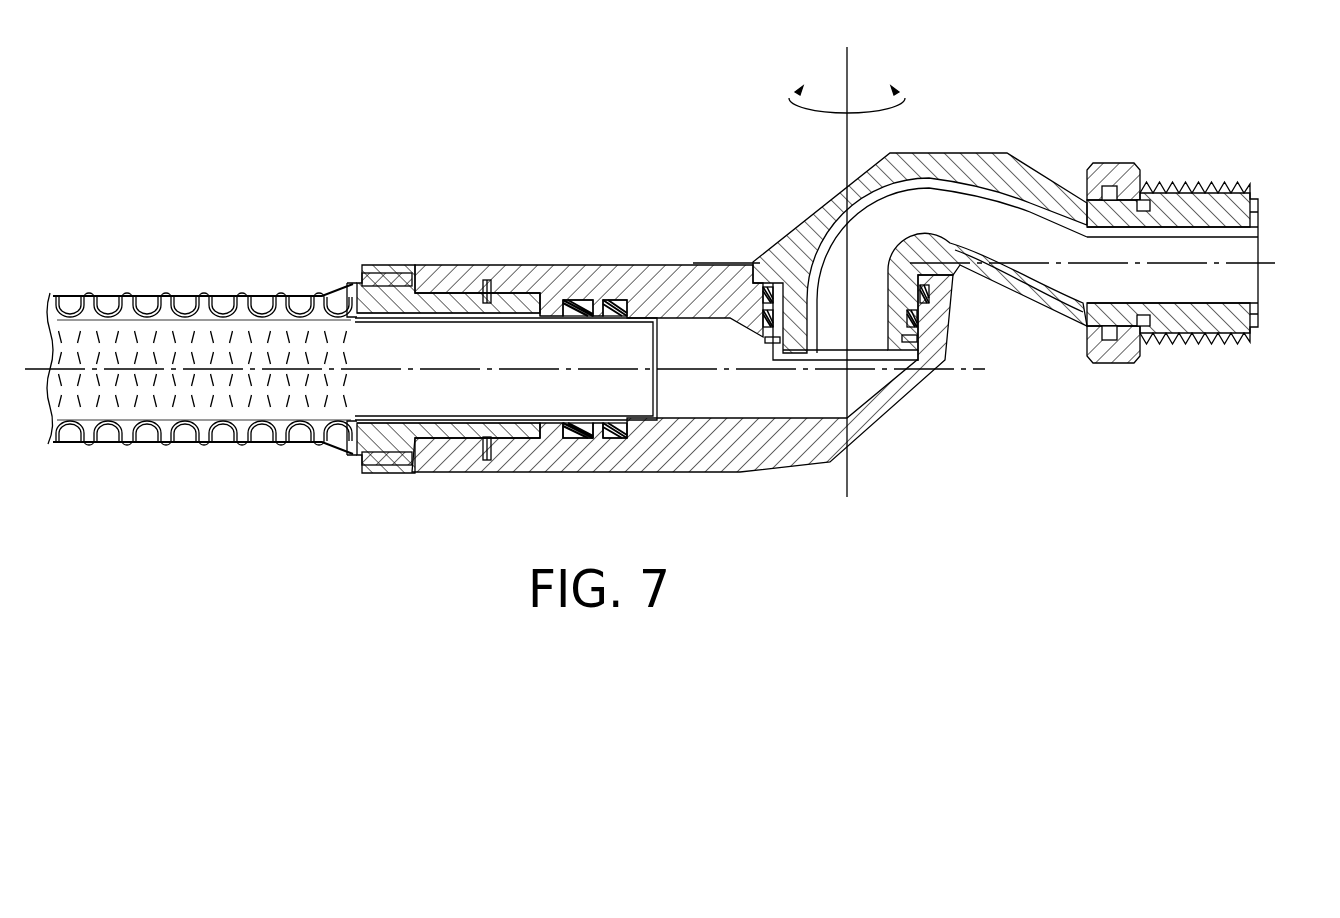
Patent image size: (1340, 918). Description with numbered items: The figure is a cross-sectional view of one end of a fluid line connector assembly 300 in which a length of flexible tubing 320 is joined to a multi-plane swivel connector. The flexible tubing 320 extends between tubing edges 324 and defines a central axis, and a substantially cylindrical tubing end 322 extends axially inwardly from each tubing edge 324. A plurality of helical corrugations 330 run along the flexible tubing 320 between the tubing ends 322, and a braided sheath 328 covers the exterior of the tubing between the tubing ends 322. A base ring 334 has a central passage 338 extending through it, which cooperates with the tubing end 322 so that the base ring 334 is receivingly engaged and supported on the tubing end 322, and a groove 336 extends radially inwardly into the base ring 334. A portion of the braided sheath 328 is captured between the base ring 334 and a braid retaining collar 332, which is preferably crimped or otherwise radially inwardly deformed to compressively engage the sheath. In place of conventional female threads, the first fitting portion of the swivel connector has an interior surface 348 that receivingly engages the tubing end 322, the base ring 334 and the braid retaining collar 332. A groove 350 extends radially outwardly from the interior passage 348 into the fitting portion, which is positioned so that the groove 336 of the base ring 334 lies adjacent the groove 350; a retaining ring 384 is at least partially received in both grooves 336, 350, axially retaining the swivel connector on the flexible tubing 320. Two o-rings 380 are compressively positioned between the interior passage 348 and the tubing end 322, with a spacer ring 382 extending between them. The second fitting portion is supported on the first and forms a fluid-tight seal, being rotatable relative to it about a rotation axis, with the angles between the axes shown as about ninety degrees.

The fluid line connector assembly 300 is at (626, 182).
The flexible tubing 320 is at (150, 292).
The tubing end 322 is at (647, 432).
The tubing edge 324 is at (596, 392).
The braided sheath 328 is at (263, 443).
The helical corrugations 330 is at (163, 430).
The braid retaining collar 332 is at (362, 266).
The base ring 334 is at (513, 296).
The groove 336 is at (480, 301).
The central passage 338 is at (545, 302).
The interior surface 348 is at (568, 439).
The groove 350 is at (485, 461).
The o-rings 380 is at (582, 299).
The spacer ring 382 is at (597, 439).
The retaining ring 384 is at (487, 279).